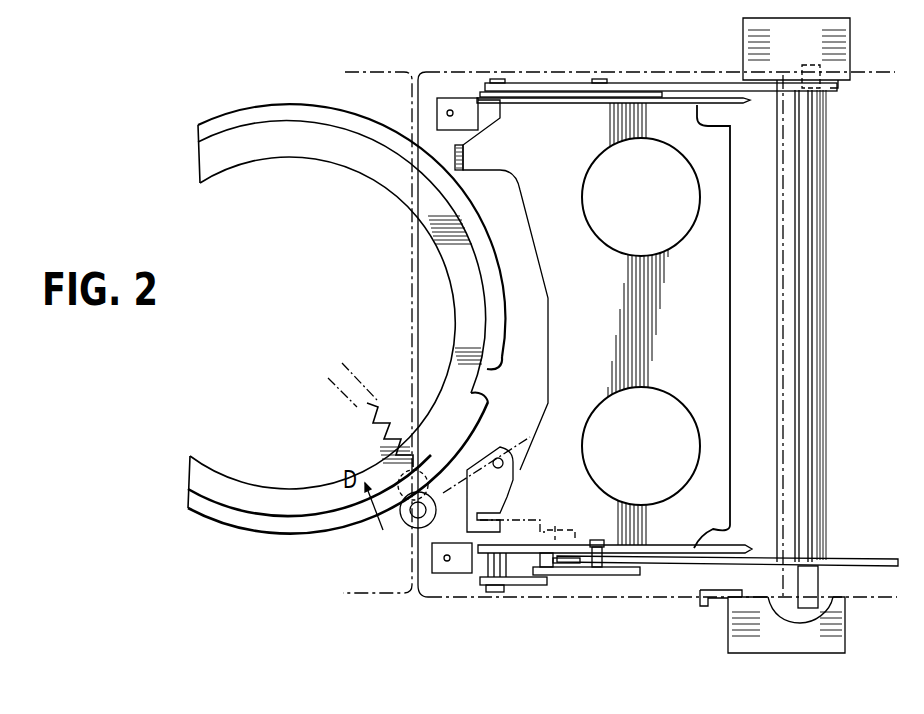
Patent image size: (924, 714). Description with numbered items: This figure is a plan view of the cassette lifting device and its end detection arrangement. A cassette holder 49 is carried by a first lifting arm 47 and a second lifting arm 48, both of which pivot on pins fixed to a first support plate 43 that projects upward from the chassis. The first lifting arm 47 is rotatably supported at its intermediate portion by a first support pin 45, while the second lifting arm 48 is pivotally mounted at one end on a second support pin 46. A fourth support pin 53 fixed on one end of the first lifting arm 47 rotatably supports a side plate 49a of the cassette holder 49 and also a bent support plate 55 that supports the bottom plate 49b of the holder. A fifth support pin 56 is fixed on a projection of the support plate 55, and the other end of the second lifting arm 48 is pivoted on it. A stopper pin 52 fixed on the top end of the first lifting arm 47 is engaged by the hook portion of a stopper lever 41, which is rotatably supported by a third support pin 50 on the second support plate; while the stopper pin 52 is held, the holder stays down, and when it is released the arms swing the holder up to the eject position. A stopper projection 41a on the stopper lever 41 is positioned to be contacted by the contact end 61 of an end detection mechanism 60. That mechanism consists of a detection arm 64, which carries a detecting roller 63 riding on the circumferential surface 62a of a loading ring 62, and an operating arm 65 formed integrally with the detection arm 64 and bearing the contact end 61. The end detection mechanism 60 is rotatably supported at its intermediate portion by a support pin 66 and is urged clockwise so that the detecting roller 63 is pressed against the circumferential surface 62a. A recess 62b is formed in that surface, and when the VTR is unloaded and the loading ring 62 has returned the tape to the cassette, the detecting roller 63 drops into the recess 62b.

The cassette holder 49 is at (535, 70).
The side plate 49a is at (538, 105).
The bottom plate 49b is at (533, 229).
The first lifting arm 47 is at (760, 547).
The first support plate 43 is at (838, 608).
The first support pin 45 is at (845, 625).
The second support pin 46 is at (722, 604).
The support plate 55 is at (673, 547).
The second lifting arm 48 is at (642, 576).
The fourth support pin 53 is at (602, 568).
The stopper pin 52 is at (592, 575).
The third support pin 50 is at (560, 580).
The stopper lever 41 is at (535, 575).
The stopper projection 41a is at (555, 526).
The fifth support pin 56 is at (495, 590).
The end detection mechanism 60 is at (347, 563).
The loading ring 62 is at (242, 515).
The circumferential surface 62a is at (298, 533).
The recess 62b is at (496, 368).
The detecting roller 63 is at (400, 522).
The detection arm 64 is at (453, 468).
The operating arm 65 is at (518, 482).
The support pin 66 is at (495, 502).
The contact end 61 is at (533, 524).